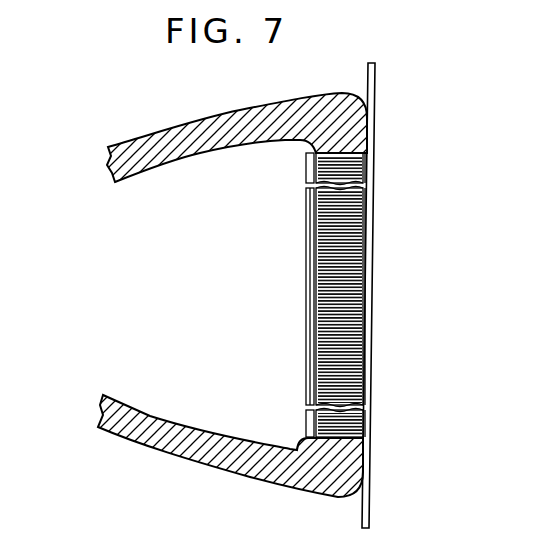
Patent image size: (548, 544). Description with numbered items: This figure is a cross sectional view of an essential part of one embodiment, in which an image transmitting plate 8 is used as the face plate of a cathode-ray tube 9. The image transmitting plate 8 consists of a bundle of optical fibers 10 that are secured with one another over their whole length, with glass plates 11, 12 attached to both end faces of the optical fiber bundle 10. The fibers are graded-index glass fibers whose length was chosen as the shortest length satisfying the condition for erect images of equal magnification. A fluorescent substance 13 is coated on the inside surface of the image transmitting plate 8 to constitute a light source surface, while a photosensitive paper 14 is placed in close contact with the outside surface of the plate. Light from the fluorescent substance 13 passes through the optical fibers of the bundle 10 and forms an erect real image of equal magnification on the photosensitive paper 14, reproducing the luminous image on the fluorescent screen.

The image transmitting plate 8 is at (273, 173).
The cathode-ray tube 9 is at (145, 130).
The bundle of optical fibers 10 is at (367, 297).
The glass plate 11 is at (312, 373).
The glass plate 12 is at (367, 211).
The fluorescent substance 13 is at (307, 333).
The photosensitive paper 14 is at (374, 248).